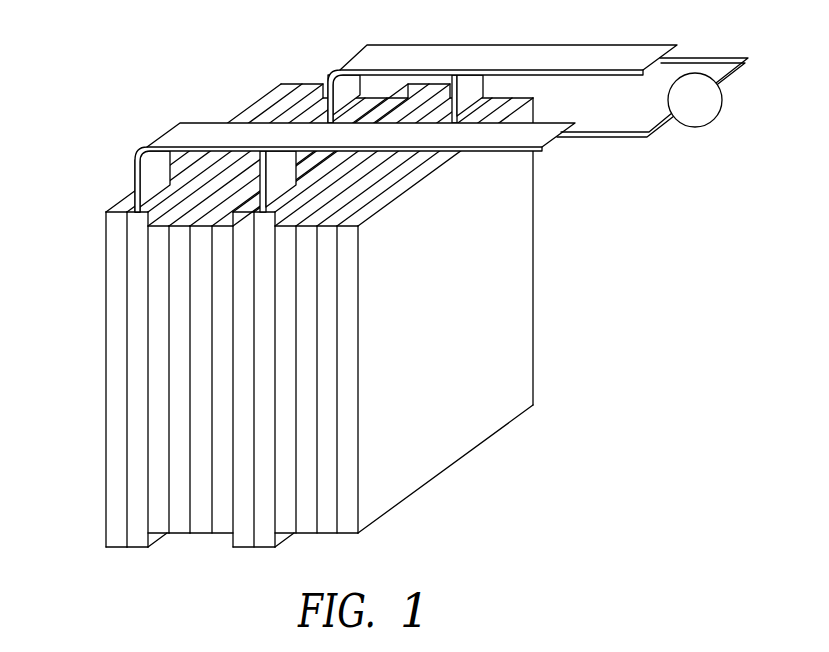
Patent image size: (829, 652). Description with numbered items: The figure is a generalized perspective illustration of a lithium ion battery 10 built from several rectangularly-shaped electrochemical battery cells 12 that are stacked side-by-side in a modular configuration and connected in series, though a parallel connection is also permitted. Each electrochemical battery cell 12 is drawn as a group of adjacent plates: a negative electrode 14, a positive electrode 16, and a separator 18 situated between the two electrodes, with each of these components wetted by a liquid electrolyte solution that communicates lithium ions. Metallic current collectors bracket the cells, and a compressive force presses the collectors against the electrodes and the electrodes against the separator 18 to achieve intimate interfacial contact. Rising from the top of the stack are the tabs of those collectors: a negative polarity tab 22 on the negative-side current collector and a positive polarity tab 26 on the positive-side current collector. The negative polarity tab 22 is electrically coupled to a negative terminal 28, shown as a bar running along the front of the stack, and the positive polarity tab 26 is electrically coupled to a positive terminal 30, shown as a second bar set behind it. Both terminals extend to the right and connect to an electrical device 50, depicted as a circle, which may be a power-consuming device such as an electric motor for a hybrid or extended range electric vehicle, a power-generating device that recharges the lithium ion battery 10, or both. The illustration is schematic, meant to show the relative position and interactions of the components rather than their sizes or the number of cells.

The lithium ion battery 10 is at (286, 304).
The electrochemical battery cell 12 is at (115, 405).
The negative electrode 14 is at (137, 462).
The positive electrode 16 is at (177, 395).
The separator 18 is at (155, 424).
The negative polarity tab 22 is at (133, 177).
The positive polarity tab 26 is at (323, 107).
The negative terminal 28 is at (517, 153).
The positive terminal 30 is at (577, 77).
The electrical device 50 is at (697, 102).